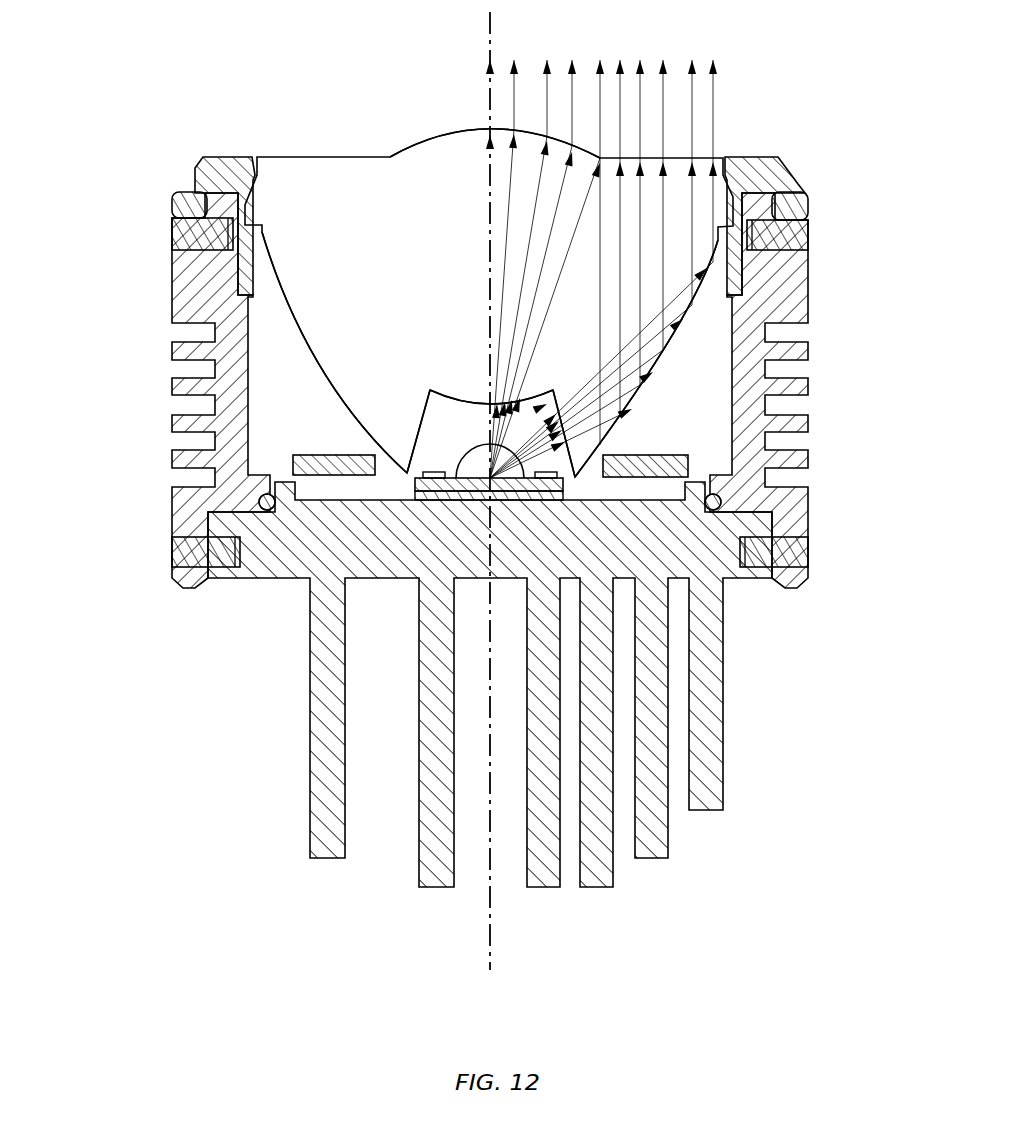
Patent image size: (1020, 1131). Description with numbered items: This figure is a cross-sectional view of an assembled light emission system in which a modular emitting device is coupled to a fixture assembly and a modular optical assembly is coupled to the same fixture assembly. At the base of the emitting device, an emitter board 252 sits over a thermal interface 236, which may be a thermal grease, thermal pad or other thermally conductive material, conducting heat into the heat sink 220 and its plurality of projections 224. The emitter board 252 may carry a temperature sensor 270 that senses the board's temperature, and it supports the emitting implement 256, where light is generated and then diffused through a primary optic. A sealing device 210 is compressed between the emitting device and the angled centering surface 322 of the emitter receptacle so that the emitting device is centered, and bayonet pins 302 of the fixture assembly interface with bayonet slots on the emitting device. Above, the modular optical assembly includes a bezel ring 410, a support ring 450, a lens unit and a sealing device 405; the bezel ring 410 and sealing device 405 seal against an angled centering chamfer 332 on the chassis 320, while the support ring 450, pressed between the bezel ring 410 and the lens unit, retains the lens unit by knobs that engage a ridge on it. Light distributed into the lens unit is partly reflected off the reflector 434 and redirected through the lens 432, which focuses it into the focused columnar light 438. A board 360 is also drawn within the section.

The sealing device 210 is at (726, 498).
The heat sink 220 is at (295, 719).
The projections 224 is at (727, 656).
The thermal interface 236 is at (448, 512).
The emitter board 252 is at (411, 485).
The emitting implement 256 is at (503, 486).
The temperature sensor 270 is at (403, 464).
The bayonet pins 302 is at (812, 233).
The chassis 320 is at (169, 299).
The angled centering surface 322 is at (259, 494).
The angled centering chamfer 332 is at (182, 197).
The circuit board 360 is at (288, 459).
The sealing device 405 is at (794, 195).
The bezel ring 410 is at (784, 153).
The lens 432 is at (401, 141).
The reflector 434 is at (281, 296).
The focused columnar light 438 is at (485, 14).
The support ring 450 is at (238, 182).